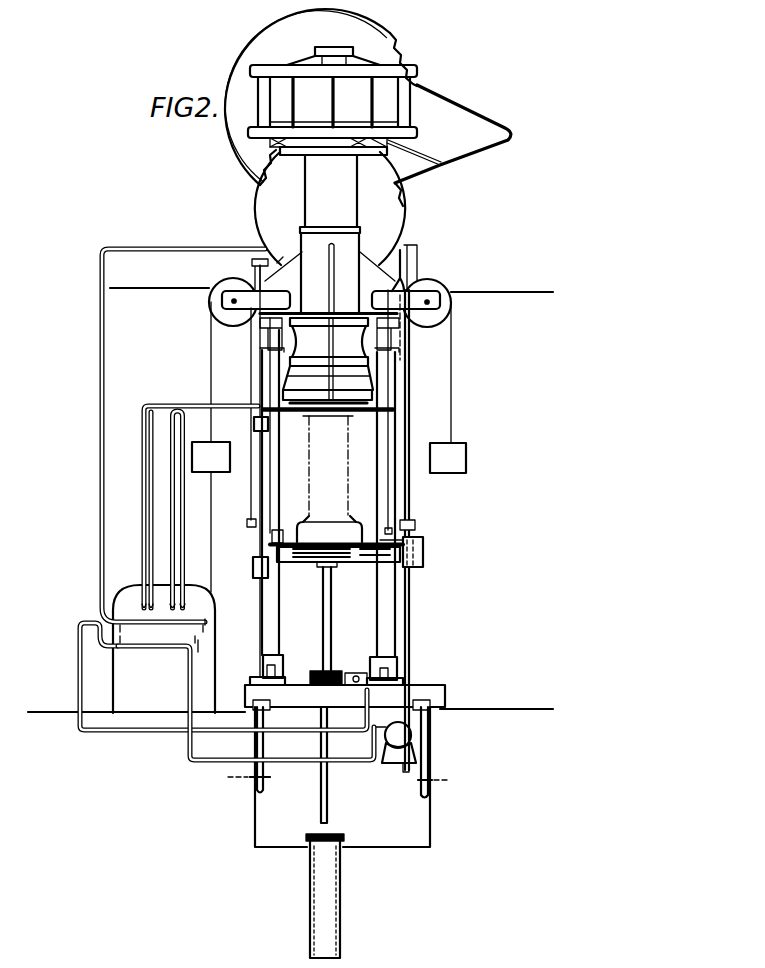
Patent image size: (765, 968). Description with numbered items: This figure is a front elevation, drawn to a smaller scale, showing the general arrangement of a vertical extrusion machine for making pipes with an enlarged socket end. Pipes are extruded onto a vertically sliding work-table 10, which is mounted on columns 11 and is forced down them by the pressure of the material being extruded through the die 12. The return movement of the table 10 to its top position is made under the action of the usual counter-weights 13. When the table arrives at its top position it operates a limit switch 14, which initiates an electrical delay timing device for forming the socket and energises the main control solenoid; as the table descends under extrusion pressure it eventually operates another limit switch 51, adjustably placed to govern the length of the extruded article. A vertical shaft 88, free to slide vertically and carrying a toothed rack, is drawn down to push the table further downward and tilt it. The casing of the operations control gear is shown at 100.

The work-table 10 is at (336, 564).
The columns 11 is at (386, 638).
The die 12 is at (312, 532).
The counter-weights 13 is at (450, 465).
The limit switch 14 is at (254, 423).
The limit switch 51 is at (253, 568).
The vertical shaft 88 is at (409, 585).
The casing of the operations control gear 100 is at (128, 668).